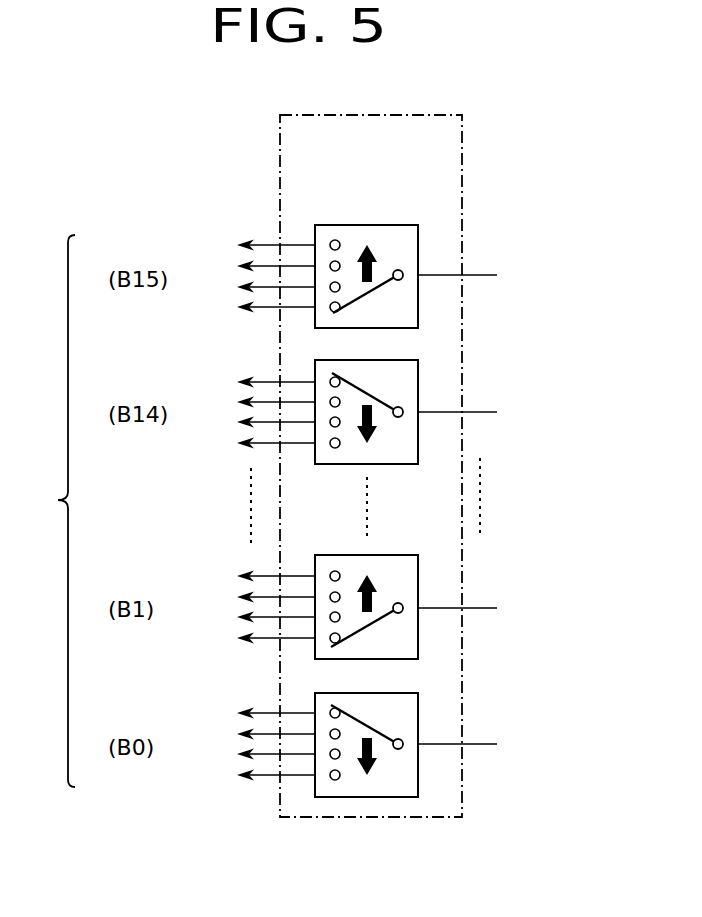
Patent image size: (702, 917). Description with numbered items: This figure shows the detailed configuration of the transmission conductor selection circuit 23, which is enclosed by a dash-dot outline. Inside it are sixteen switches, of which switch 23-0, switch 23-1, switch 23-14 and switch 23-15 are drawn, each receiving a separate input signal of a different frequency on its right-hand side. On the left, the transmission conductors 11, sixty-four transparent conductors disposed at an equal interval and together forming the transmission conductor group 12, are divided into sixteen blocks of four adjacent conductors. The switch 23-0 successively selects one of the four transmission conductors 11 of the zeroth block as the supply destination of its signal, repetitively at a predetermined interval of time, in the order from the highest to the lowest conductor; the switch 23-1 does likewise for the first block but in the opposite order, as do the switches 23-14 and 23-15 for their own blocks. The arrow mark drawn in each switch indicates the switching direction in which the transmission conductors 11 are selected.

The transmission conductor selection circuit 23 is at (462, 132).
The switch 23-15 is at (407, 225).
The switch 23-14 is at (403, 360).
The switch 23-1 is at (403, 555).
The switch 23-0 is at (403, 693).
The transmission conductor 11 is at (197, 778).
The transmission conductor group 12 is at (51, 511).